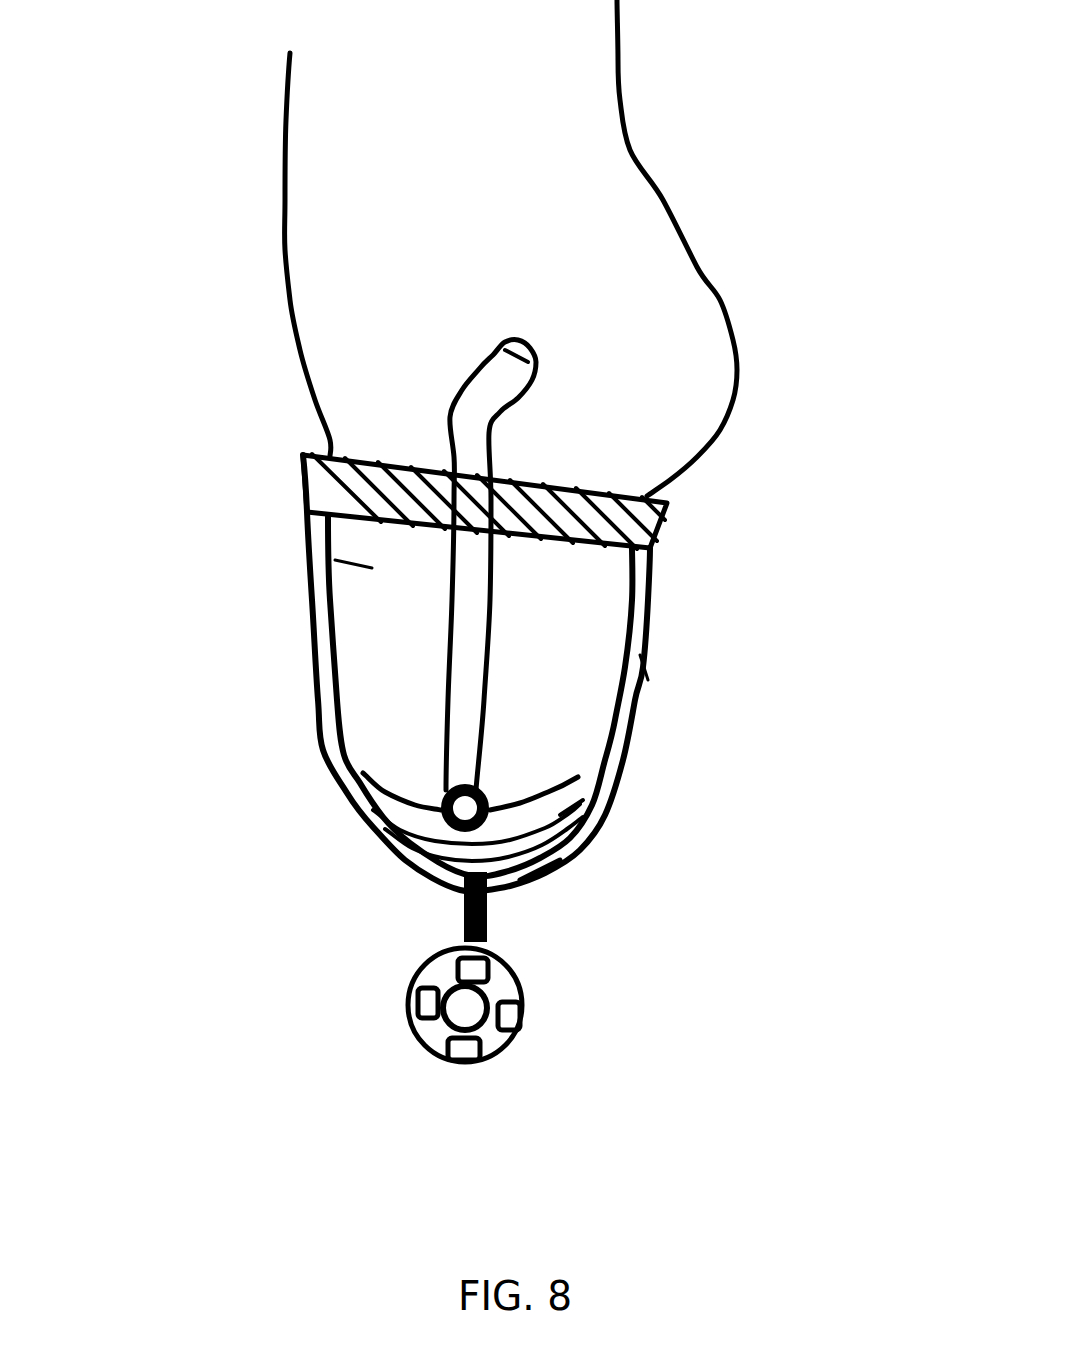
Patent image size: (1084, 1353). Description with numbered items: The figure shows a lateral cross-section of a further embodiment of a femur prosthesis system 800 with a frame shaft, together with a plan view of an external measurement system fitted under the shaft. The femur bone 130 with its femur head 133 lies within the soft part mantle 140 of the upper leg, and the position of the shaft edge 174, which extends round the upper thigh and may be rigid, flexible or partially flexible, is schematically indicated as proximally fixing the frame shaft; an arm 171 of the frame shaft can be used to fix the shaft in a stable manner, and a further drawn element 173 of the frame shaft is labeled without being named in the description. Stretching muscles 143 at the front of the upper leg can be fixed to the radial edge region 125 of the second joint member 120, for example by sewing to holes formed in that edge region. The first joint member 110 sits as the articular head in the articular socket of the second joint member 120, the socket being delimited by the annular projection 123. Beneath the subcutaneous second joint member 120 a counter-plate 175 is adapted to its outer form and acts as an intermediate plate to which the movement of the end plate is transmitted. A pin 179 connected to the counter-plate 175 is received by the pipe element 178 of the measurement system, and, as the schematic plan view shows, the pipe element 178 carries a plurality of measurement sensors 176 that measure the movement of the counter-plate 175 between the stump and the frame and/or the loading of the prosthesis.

The prosthesis system 800 is at (642, 845).
The femur bone 130 is at (473, 462).
The femur head 133 is at (533, 357).
The soft part mantle 140 is at (367, 565).
The stretching muscles 143 is at (317, 605).
The arm 171 is at (313, 638).
The socket inner wall 173 is at (645, 670).
The shaft edge 174 is at (650, 522).
The first joint member 110 is at (477, 792).
The annular projection 123 is at (430, 803).
The radial edge region 125 is at (598, 800).
The second joint member 120 is at (427, 818).
The counter-plate 175 is at (540, 862).
The pin 179 is at (457, 925).
The measurement sensors 176 is at (513, 1007).
The pipe element 178 is at (442, 1053).